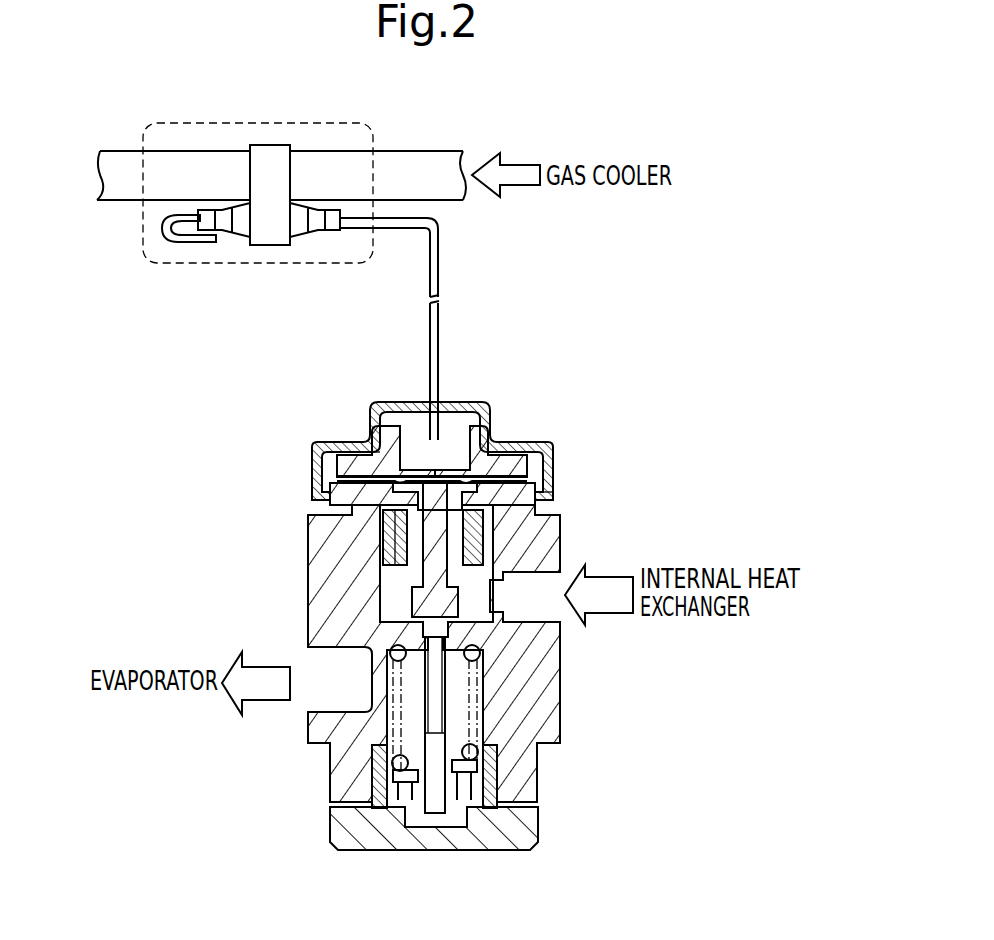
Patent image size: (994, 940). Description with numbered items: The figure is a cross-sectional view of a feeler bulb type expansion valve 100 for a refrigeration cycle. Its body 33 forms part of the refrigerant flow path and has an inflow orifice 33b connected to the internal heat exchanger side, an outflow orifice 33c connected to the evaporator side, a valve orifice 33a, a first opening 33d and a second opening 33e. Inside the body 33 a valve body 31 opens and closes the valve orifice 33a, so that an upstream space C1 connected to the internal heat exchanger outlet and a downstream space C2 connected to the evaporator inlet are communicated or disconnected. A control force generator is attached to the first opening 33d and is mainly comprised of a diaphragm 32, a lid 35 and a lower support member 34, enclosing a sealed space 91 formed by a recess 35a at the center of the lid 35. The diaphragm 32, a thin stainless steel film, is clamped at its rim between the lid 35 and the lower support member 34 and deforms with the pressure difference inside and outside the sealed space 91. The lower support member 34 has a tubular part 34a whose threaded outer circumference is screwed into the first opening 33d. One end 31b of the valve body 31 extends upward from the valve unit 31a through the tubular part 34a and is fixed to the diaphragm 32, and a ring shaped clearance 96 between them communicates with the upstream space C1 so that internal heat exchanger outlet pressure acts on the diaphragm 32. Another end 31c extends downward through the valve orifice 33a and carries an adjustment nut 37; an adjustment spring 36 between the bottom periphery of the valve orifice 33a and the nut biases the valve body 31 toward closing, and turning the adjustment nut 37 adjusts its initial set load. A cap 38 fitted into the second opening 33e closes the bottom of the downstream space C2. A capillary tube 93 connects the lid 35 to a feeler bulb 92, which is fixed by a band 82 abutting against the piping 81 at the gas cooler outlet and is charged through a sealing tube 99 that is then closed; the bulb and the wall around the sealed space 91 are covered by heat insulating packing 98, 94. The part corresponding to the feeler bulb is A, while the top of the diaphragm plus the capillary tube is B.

The expansion valve 100 is at (262, 412).
The piping 81 is at (413, 165).
The band 82 is at (268, 155).
The heat insulating packing 98 is at (170, 133).
The sealing tube 99 is at (160, 226).
The feeler bulb 92 is at (320, 228).
The feeler bulb part A is at (245, 228).
The capillary tube 93 is at (438, 258).
The top of diaphragm and capillary tube part B is at (438, 352).
The lid 35 is at (360, 430).
The recess 35a is at (385, 440).
The heat insulating packing 94 is at (550, 446).
The one end of valve body 31b is at (510, 455).
The sealed space 91 is at (450, 455).
The diaphragm 32 is at (522, 476).
The first opening 33d is at (533, 505).
The valve body 31 is at (563, 540).
The inflow orifice 33b is at (545, 575).
The outflow orifice 33c is at (308, 703).
The lower support member 34 is at (383, 525).
The tubular part 34a is at (383, 548).
The clearance 96 is at (385, 572).
The upstream space C1 is at (390, 602).
The valve unit 31a is at (520, 630).
The valve orifice 33a is at (500, 664).
The body 33 is at (530, 678).
The downstream space C2 is at (385, 758).
The adjustment spring 36 is at (378, 790).
The second opening 33e is at (500, 772).
The cap 38 is at (485, 851).
The adjustment nut 37 is at (345, 829).
The another end of valve body 31c is at (505, 812).